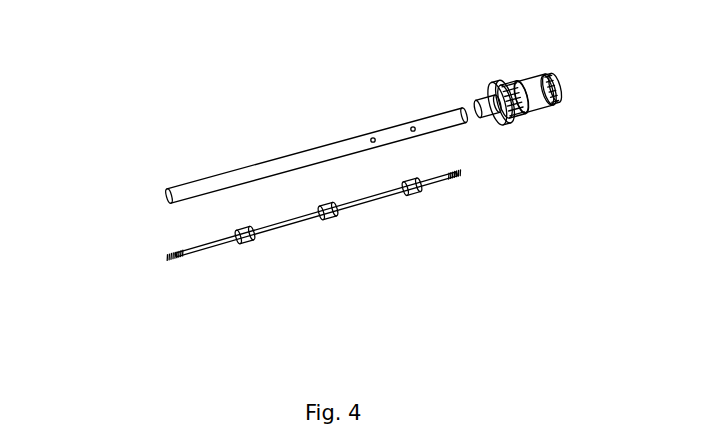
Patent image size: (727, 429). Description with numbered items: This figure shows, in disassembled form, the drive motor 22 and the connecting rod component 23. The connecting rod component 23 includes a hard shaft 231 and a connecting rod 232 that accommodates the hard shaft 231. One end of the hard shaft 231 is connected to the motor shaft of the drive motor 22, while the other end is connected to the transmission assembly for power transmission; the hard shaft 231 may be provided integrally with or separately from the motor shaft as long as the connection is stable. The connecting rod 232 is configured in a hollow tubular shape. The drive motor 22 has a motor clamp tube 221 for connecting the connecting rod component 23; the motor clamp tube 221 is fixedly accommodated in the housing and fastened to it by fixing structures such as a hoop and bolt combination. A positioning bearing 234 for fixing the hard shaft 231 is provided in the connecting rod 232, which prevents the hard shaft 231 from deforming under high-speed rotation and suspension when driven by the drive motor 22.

The drive motor 22 is at (530, 83).
The motor clamp tube 221 is at (500, 122).
The connecting rod component 23 is at (106, 70).
The hard shaft 231 is at (355, 207).
The connecting rod 232 is at (323, 145).
The positioning bearing 234 is at (415, 196).